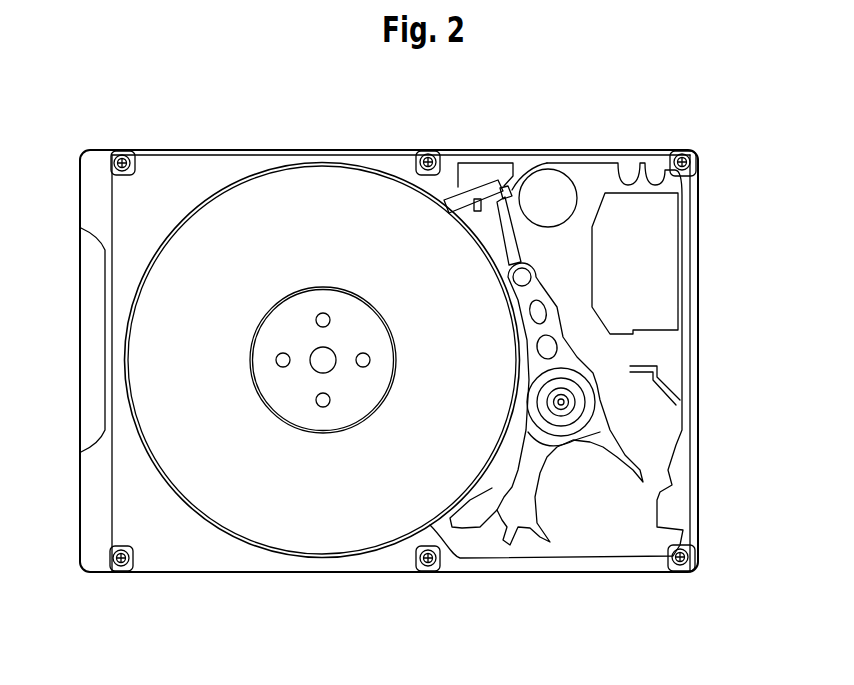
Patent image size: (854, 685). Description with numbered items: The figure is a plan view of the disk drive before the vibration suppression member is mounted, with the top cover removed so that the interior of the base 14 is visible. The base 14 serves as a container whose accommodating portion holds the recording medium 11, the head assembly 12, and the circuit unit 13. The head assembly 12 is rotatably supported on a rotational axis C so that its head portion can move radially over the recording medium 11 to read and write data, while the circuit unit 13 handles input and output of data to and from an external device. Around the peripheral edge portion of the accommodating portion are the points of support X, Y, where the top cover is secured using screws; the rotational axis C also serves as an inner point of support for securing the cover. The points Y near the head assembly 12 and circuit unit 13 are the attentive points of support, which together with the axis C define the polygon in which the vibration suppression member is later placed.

The recording medium 11 is at (336, 162).
The head assembly 12 is at (518, 190).
The circuit unit 13 is at (673, 236).
The base 14 is at (700, 328).
The rotational axis C is at (561, 402).
The peripheral edge point of support X is at (128, 158).
The attentive point of support Y is at (436, 160).